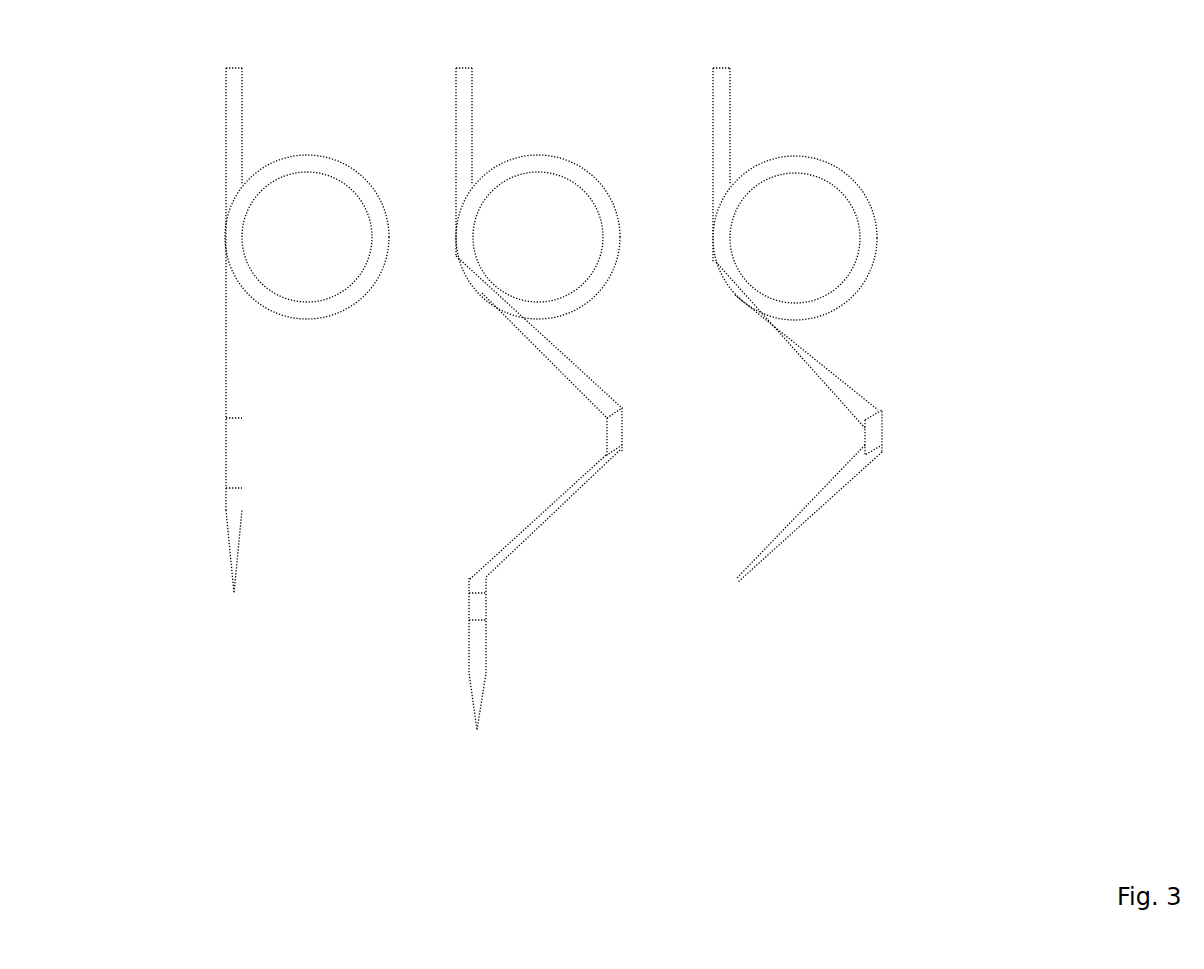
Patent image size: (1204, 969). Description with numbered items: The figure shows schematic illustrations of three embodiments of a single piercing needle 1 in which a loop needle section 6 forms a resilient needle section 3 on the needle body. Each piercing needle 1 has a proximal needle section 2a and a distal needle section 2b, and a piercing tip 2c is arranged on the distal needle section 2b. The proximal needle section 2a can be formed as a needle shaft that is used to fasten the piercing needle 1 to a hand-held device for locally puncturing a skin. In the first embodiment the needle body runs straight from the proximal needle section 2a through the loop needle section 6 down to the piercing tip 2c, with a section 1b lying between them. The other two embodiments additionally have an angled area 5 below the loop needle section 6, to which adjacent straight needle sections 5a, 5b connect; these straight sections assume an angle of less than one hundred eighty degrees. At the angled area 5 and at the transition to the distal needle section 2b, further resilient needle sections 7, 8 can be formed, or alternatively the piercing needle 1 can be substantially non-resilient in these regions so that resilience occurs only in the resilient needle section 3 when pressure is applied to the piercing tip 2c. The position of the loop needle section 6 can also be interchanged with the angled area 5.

The piercing needle 1 is at (955, 73).
The wire section 1b is at (245, 523).
The proximal needle section 2a is at (237, 99).
The distal needle section 2b is at (477, 647).
The piercing tip 2c is at (235, 598).
The resilient needle section 3 is at (236, 240).
The angled area 5 is at (701, 428).
The straight needle section 5a is at (578, 380).
The straight needle section 5b is at (528, 531).
The loop needle section 6 is at (341, 304).
The further resilient needle section 7 is at (615, 423).
The further resilient needle section 8 is at (480, 576).